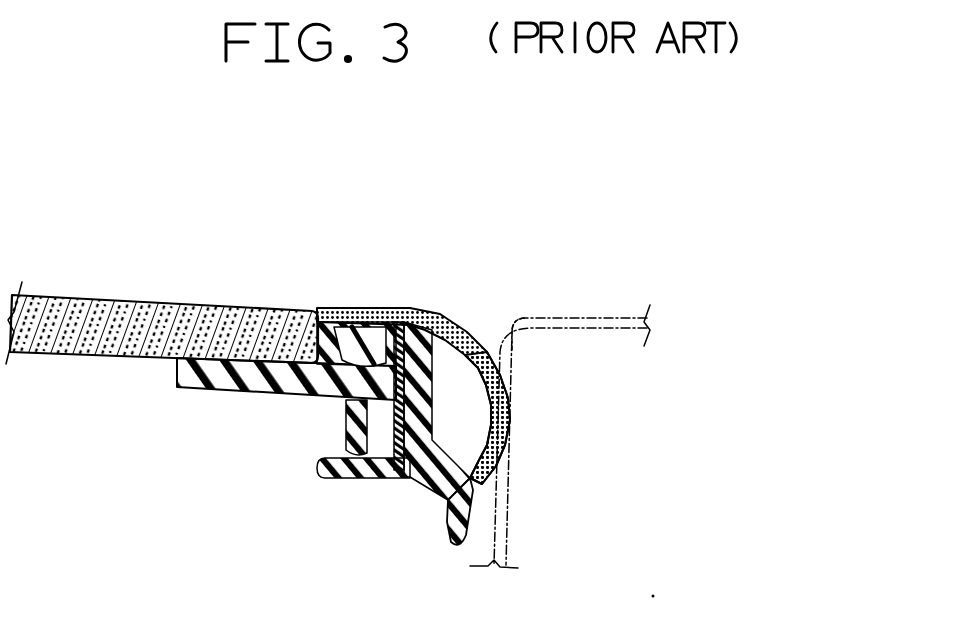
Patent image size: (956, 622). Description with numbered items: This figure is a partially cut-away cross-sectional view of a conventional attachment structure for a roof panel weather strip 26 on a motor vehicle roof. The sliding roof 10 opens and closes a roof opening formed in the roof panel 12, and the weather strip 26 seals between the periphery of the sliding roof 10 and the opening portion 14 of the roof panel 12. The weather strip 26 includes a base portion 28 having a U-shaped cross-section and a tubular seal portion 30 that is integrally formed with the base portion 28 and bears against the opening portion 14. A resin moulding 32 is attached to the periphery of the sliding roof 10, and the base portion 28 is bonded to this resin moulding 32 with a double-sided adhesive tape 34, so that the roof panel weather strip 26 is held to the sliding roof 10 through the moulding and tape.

The sliding roof 10 is at (162, 279).
The roof panel 12 is at (560, 381).
The opening portion 14 is at (501, 299).
The roof panel weather strip 26 is at (413, 340).
The base portion 28 is at (412, 515).
The tubular seal portion 30 is at (546, 418).
The resin moulding 32 is at (284, 424).
The double-sided adhesive tape 34 is at (477, 411).